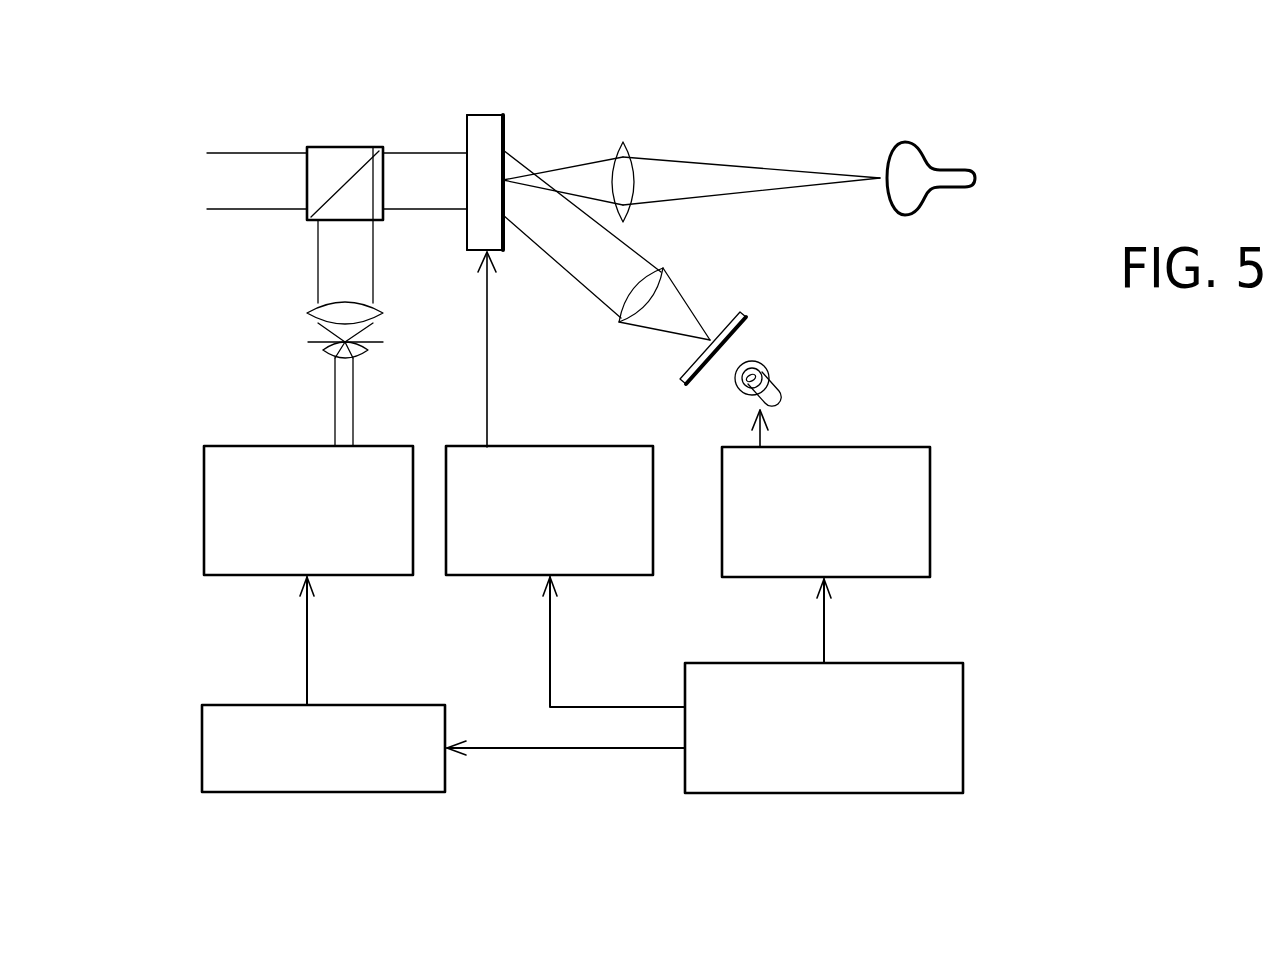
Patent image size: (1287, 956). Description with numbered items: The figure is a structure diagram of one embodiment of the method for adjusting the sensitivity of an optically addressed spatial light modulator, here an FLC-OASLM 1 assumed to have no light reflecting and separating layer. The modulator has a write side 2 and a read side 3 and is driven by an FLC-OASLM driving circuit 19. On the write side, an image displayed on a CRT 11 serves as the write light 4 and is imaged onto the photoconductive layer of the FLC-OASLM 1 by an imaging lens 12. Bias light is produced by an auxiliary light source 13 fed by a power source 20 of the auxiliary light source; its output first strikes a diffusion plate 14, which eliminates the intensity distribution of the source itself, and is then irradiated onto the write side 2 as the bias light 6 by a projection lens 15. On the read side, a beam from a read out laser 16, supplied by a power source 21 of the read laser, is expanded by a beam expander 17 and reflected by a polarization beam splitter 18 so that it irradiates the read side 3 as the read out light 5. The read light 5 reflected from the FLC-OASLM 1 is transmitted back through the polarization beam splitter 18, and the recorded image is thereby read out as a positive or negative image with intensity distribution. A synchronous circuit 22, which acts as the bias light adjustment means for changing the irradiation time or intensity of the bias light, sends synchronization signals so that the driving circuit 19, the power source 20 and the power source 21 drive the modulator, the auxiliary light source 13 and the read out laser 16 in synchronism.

The FLC-OASLM 1 is at (480, 118).
The write side 2 is at (503, 135).
The read side 3 is at (467, 140).
The write light 4 is at (583, 166).
The read out light 5 is at (430, 209).
The bias light 6 is at (578, 280).
The CRT 11 is at (893, 145).
The imaging lens 12 is at (628, 145).
The auxiliary light source 13 is at (767, 363).
The diffusion plate 14 is at (683, 382).
The projection lens 15 is at (620, 320).
The read out laser 16 is at (270, 575).
The beam expander 17 is at (307, 313).
The polarization beam splitter 18 is at (333, 147).
The FLC-OASLM driving circuit 19 is at (597, 575).
The power source of the auxiliary light source 20 is at (930, 483).
The power source of the read laser 21 is at (352, 705).
The synchronous circuit 22 is at (685, 775).